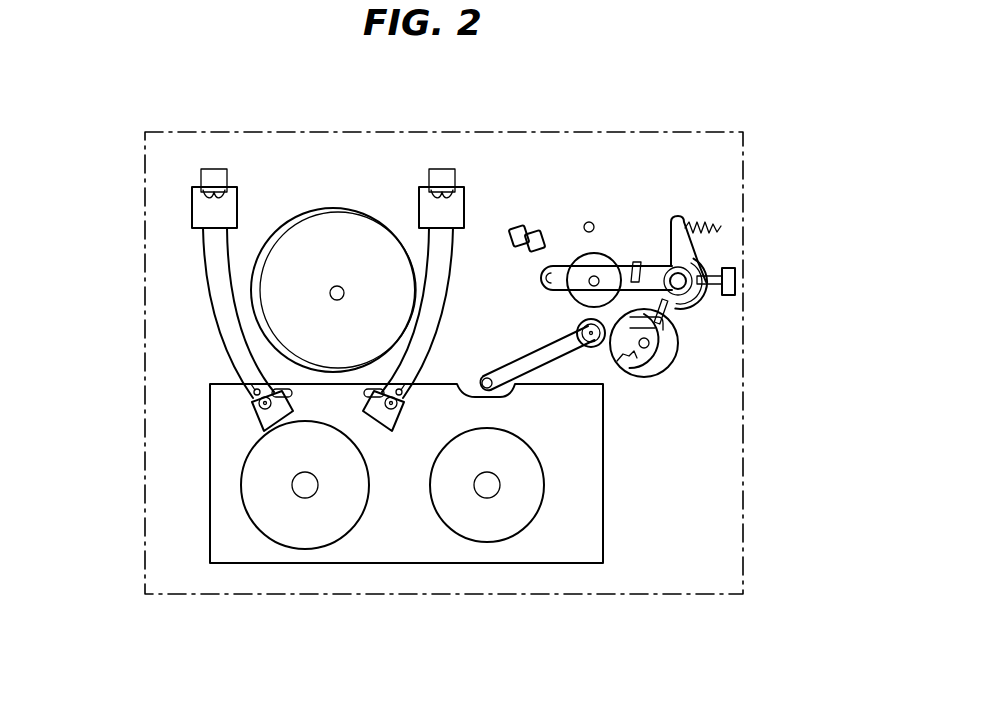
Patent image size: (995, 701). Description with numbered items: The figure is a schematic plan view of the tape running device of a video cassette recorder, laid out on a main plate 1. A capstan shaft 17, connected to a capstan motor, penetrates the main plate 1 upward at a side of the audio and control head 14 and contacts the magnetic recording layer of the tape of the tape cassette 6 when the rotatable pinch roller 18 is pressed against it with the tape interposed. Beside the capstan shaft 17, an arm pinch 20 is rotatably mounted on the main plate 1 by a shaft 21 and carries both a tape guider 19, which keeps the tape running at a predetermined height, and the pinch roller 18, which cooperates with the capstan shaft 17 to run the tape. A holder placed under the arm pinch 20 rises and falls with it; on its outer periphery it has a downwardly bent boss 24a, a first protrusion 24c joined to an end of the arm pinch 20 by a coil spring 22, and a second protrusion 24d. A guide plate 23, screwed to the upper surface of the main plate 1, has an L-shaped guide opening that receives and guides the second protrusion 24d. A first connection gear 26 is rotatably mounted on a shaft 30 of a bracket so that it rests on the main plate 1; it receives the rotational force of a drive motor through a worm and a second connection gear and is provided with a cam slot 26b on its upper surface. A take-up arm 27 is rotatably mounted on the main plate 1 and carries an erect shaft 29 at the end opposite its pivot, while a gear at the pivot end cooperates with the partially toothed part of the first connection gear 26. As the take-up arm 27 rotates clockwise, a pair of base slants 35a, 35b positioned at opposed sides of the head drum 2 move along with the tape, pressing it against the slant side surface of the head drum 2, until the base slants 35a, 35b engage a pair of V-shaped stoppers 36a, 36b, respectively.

The main plate 1 is at (653, 582).
The head drum 2 is at (335, 212).
The tape cassette 6 is at (220, 515).
The audio and control head 14 is at (528, 220).
The capstan shaft 17 is at (593, 224).
The pinch roller 18 is at (662, 264).
The tape guider 19 is at (557, 222).
The arm pinch 20 is at (694, 258).
The shaft 21 is at (712, 298).
The coil spring 22 is at (707, 225).
The guide plate 23 is at (736, 282).
The boss 24a is at (688, 308).
The first protrusion 24c is at (703, 243).
The second protrusion 24d is at (710, 272).
The first connection gear 26 is at (676, 368).
The cam slot 26b is at (680, 345).
The take-up arm 27 is at (547, 363).
The erect shaft 29 is at (497, 397).
The shaft 30 is at (647, 348).
The base slant 35a is at (262, 414).
The base slant 35b is at (388, 425).
The V-shaped stopper 36a is at (213, 169).
The V-shaped stopper 36b is at (440, 169).